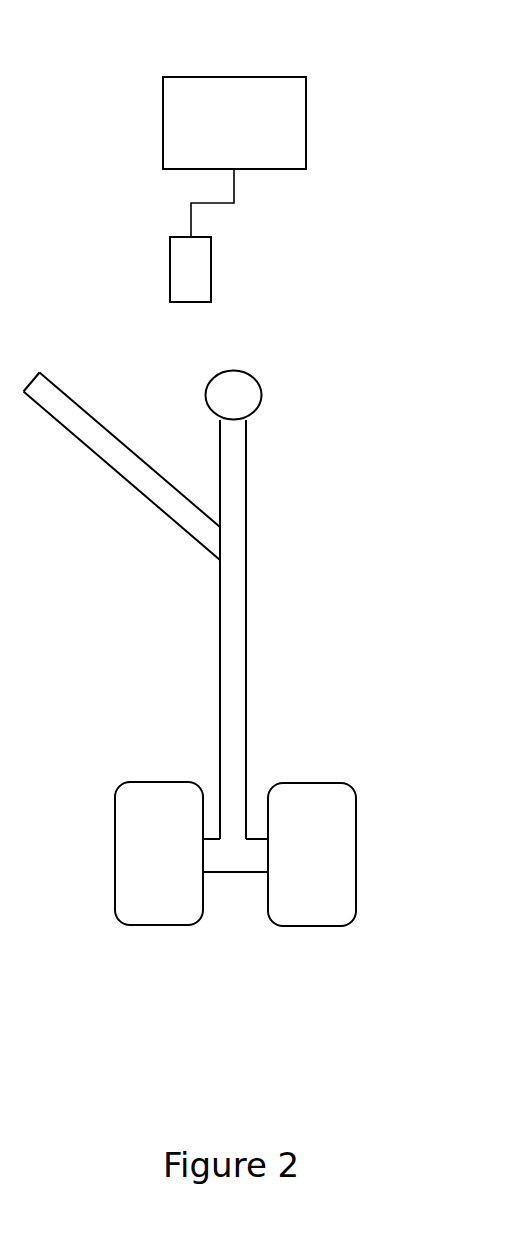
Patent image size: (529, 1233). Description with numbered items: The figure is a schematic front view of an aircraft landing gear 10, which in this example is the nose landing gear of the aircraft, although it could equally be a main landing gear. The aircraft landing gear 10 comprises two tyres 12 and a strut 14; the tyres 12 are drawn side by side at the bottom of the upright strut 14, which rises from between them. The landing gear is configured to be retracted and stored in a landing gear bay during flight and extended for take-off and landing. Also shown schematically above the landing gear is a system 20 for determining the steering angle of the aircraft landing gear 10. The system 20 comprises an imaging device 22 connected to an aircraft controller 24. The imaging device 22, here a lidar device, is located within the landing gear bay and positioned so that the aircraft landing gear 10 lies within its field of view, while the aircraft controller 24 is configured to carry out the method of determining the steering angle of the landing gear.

The aircraft landing gear 10 is at (115, 367).
The tyres 12 is at (125, 817).
The strut 14 is at (247, 655).
The system 20 is at (400, 168).
The imaging device 22 is at (211, 268).
The aircraft controller 24 is at (268, 135).